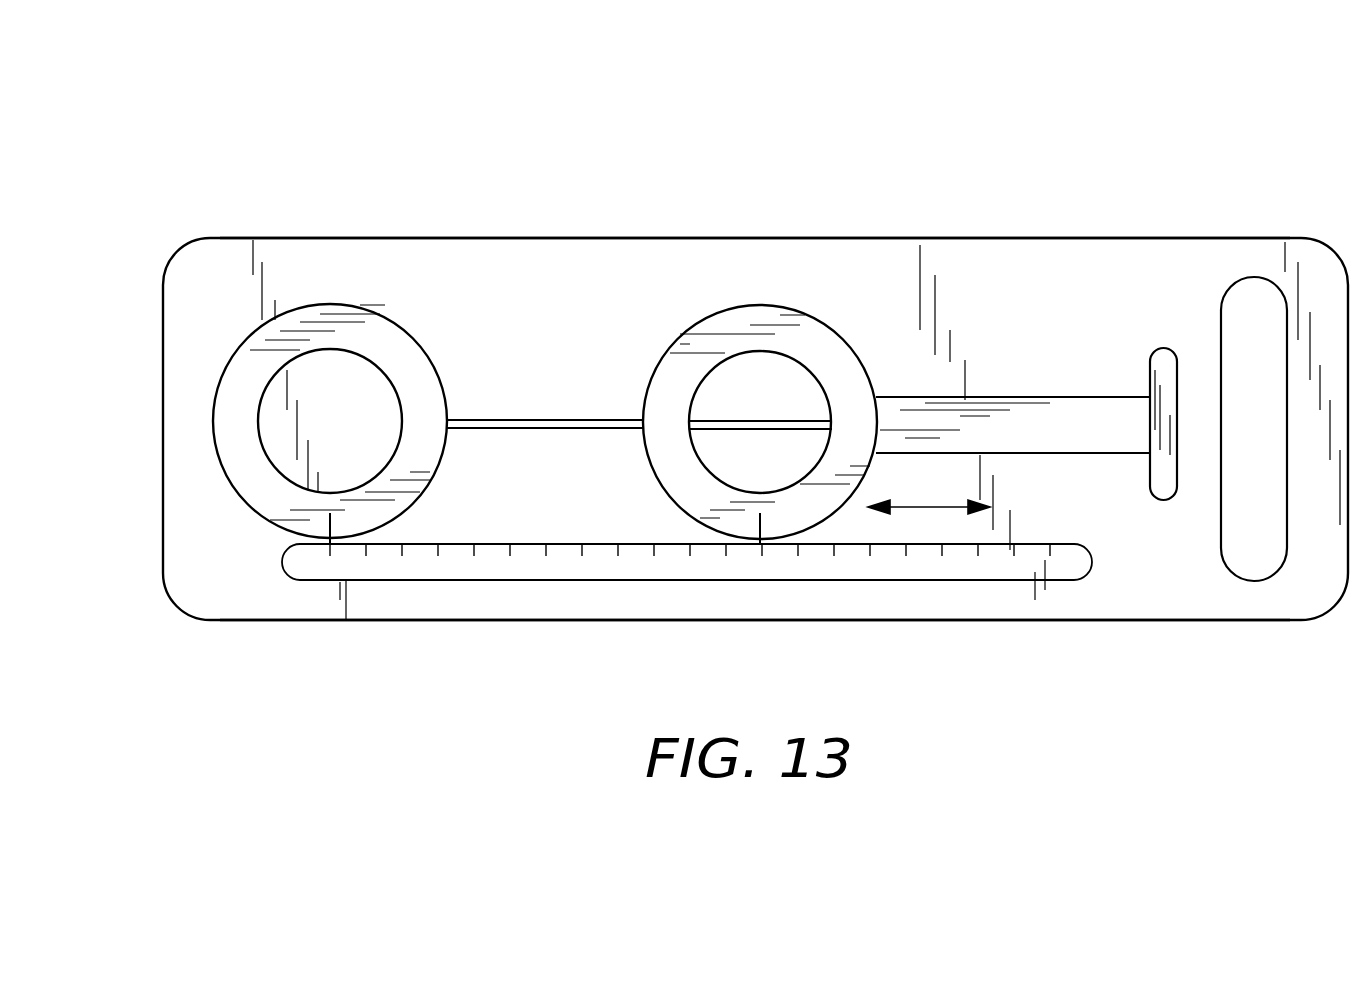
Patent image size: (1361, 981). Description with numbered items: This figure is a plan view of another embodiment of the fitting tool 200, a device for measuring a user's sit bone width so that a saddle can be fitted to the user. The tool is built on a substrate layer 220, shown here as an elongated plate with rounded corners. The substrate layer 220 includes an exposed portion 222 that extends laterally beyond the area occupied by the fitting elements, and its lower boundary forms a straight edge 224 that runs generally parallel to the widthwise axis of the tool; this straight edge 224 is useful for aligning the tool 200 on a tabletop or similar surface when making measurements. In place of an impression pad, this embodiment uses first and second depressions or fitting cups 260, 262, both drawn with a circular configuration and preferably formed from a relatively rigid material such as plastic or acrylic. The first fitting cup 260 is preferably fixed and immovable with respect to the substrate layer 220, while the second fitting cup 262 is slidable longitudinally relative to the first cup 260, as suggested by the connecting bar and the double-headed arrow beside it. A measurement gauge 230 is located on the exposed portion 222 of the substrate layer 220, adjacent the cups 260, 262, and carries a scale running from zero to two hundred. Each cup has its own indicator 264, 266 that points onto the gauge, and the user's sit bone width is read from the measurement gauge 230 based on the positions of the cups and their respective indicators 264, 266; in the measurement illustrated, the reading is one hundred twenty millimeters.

The fitting tool 200 is at (1107, 132).
The substrate layer 220 is at (1183, 563).
The exposed portion 222 is at (213, 273).
The straight edge 224 is at (568, 620).
The measurement gauge 230 is at (1075, 570).
The first fitting cup 260 is at (328, 323).
The second fitting cup 262 is at (760, 315).
The indicator 264 is at (330, 525).
The indicator 266 is at (762, 525).